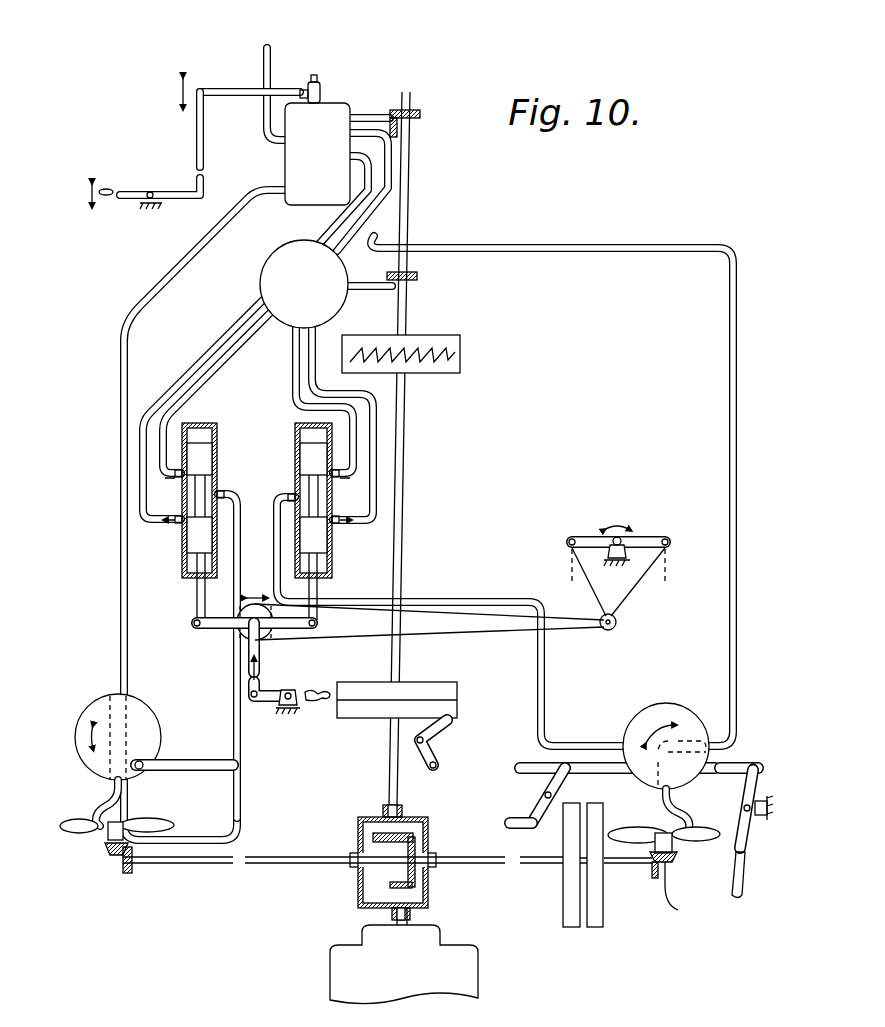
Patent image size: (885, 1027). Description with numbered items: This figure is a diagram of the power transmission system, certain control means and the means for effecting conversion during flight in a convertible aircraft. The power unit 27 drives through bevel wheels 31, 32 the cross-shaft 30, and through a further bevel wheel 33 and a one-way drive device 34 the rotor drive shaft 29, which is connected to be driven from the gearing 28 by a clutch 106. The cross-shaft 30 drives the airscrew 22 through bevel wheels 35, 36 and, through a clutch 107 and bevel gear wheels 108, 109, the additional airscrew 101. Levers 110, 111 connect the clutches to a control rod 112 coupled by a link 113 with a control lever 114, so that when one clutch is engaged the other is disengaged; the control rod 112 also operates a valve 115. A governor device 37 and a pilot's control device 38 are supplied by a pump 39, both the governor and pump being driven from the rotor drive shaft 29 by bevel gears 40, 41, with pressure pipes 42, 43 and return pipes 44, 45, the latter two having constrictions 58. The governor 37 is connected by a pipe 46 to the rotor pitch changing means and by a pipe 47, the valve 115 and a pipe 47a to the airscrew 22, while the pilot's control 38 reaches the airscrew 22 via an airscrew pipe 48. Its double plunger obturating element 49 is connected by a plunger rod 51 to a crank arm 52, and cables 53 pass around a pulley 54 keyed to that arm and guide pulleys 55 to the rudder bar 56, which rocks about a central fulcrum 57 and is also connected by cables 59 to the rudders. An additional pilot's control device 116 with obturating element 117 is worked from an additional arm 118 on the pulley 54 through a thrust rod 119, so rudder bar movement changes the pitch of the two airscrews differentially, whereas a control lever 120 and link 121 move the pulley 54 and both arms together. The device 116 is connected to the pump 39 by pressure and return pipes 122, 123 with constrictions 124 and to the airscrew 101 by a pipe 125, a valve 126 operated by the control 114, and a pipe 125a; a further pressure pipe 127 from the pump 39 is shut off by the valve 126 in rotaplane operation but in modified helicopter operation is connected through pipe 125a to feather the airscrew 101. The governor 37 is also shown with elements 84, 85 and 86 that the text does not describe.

The airscrew 22 is at (82, 831).
The power unit 27 is at (404, 964).
The gearing 28 is at (416, 820).
The rotor drive shaft 29 is at (410, 313).
The cross-shaft 30 is at (546, 866).
The bevel wheel 31 is at (413, 888).
The bevel wheel 32 is at (418, 846).
The bevel wheel 33 is at (385, 834).
The one-way drive device 34 is at (462, 358).
The bevel wheel 35 is at (128, 862).
The bevel wheel 36 is at (110, 851).
The governor device 37 is at (300, 160).
The pilot's control device 38 is at (212, 428).
The pump 39 is at (335, 300).
The bevel gear 40 is at (392, 108).
The bevel gear 41 is at (417, 276).
The pressure pipe 42 is at (394, 190).
The pressure pipe 43 is at (216, 368).
The release or return pipe 44 is at (338, 223).
The release or return pipe 45 is at (208, 355).
The pipe 46 is at (266, 52).
The pipe 47 is at (151, 300).
The pipe 47a is at (118, 801).
The airscrew pipe 48 is at (234, 676).
The double plunger obturating element 49 is at (200, 490).
The plunger rod 51 is at (196, 594).
The crank arm 52 is at (222, 631).
The cables 53 is at (456, 631).
The pulley 54 is at (270, 632).
The guide pulleys 55 is at (613, 629).
The rudder bar 56 is at (640, 535).
The central fulcrum 57 is at (612, 536).
The constrictions 58 is at (170, 520).
The cables 59 is at (668, 574).
The pipe 84 is at (240, 88).
The pipe 85 is at (196, 148).
The lever 86 is at (133, 200).
The airscrew 101 is at (700, 842).
The clutch 106 is at (418, 699).
The clutch 107 is at (585, 895).
The bevel gear wheel 108 is at (655, 870).
The bevel gear wheel 109 is at (672, 909).
The lever 110 is at (436, 736).
The lever 111 is at (540, 790).
The control rod 112 is at (483, 764).
The link 113 is at (726, 761).
The control lever 114 is at (745, 816).
The valve 115 is at (150, 739).
The additional pilot's control device 116 is at (300, 430).
The double plunger obturating element 117 is at (312, 497).
The additional arm 118 is at (318, 630).
The thrust rod 119 is at (318, 591).
The control lever 120 is at (300, 705).
The link 121 is at (262, 671).
The pressure pipe 122 is at (362, 434).
The release or return pipe 123 is at (378, 460).
The constrictions 124 is at (352, 520).
The pipe 125 is at (396, 600).
The pipe 125a is at (670, 809).
The valve 126 is at (641, 716).
The pressure pipe 127 is at (610, 256).